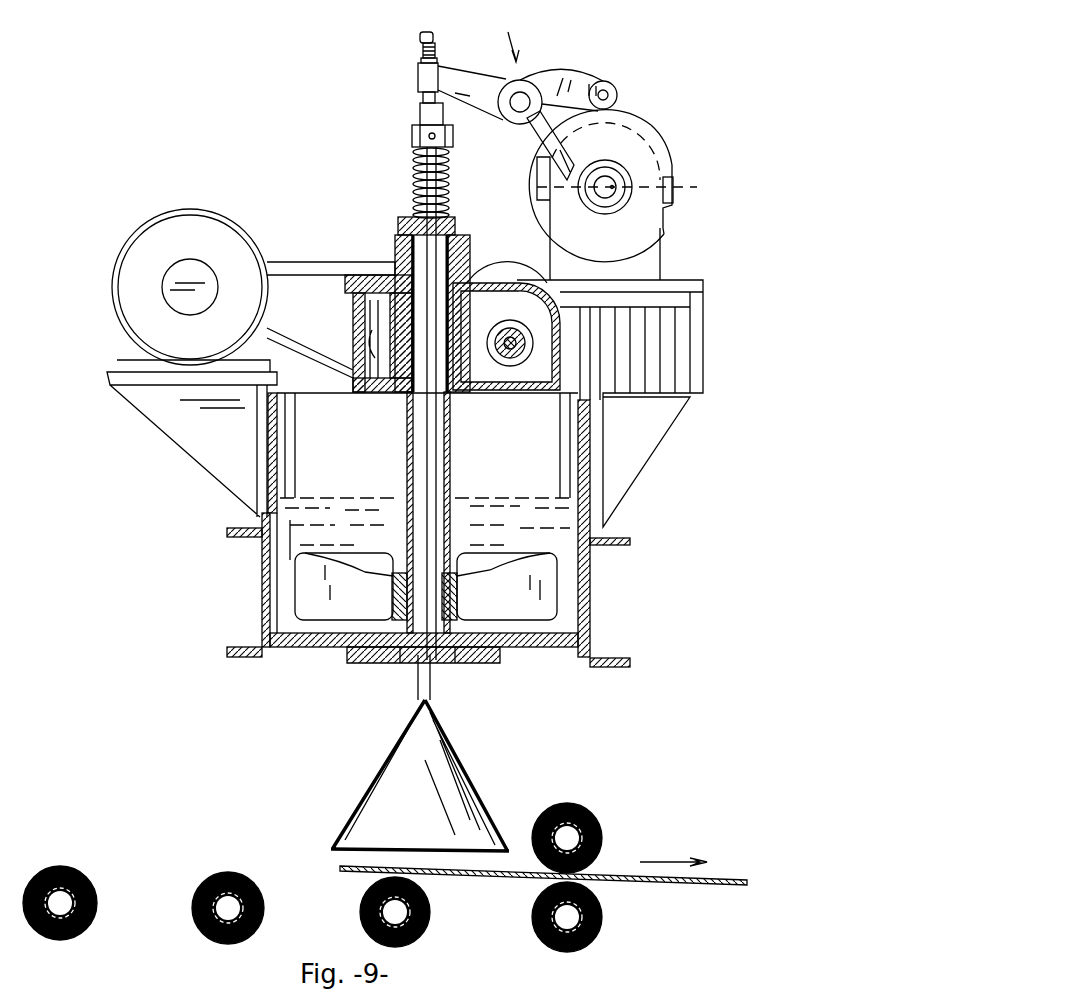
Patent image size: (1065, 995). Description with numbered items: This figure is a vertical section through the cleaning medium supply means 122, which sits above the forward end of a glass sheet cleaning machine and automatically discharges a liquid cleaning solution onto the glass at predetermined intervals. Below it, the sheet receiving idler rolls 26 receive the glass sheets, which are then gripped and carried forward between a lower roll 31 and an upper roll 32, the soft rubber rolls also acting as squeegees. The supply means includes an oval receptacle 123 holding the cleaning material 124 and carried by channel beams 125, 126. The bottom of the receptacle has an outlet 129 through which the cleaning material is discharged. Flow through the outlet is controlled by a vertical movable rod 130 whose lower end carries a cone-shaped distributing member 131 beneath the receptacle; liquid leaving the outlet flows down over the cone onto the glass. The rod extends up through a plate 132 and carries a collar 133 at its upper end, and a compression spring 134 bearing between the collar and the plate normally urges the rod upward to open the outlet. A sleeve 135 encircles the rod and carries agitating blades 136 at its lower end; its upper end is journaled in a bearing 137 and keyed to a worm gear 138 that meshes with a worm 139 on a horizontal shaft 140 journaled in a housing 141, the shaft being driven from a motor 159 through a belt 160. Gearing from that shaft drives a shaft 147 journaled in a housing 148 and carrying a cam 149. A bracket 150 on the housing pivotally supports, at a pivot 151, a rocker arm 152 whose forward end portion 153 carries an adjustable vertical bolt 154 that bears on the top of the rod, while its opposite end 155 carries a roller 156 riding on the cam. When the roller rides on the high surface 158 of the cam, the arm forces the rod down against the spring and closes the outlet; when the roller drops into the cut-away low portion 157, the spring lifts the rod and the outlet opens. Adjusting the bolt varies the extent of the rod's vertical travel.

The sheet receiving idler rolls 26 is at (192, 910).
The lower roll 31 is at (602, 922).
The upper roll 32 is at (602, 830).
The cleaning medium supply means 122 is at (755, 434).
The receptacle 123 is at (262, 548).
The cleaning material 124 is at (350, 500).
The channel beam 125 is at (262, 600).
The channel beam 126 is at (590, 600).
The outlet 129 is at (400, 662).
The vertical movable rod 130 is at (437, 455).
The cone-shaped distributing member 131 is at (442, 752).
The plate 132 is at (400, 222).
The collar 133 is at (410, 137).
The compression spring 134 is at (413, 173).
The sleeve 135 is at (407, 425).
The agitating blades 136 is at (500, 578).
The bearing 137 is at (395, 248).
The worm gear 138 is at (358, 338).
The worm 139 is at (512, 362).
The horizontal shaft 140 is at (535, 333).
The housing 141 is at (560, 372).
The shaft 147 is at (600, 200).
The housing 148 is at (676, 190).
The cam 149 is at (643, 135).
The bracket 150 is at (532, 142).
The pivot 151 is at (514, 112).
The rocker arm 152 is at (509, 38).
The forward end portion 153 is at (473, 72).
The vertical bolt 154 is at (418, 53).
The opposite end 155 is at (567, 78).
The roller 156 is at (612, 86).
The cut-away or low portion 157 is at (650, 218).
The surface 158 is at (531, 216).
The motor 159 is at (128, 297).
The belt 160 is at (290, 262).